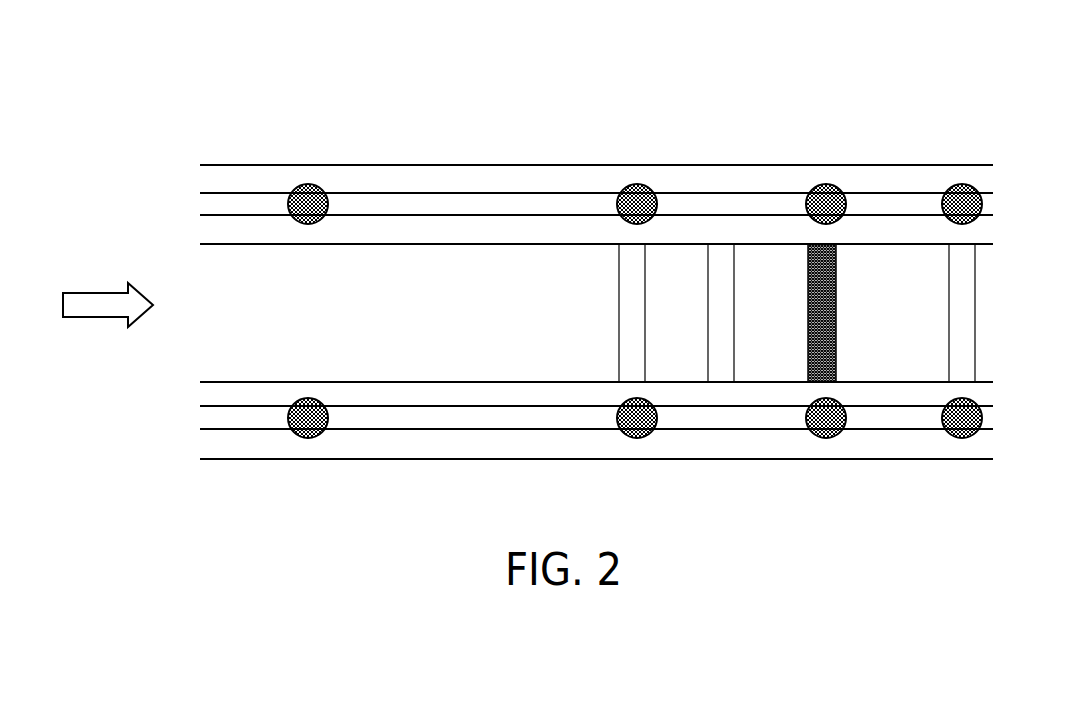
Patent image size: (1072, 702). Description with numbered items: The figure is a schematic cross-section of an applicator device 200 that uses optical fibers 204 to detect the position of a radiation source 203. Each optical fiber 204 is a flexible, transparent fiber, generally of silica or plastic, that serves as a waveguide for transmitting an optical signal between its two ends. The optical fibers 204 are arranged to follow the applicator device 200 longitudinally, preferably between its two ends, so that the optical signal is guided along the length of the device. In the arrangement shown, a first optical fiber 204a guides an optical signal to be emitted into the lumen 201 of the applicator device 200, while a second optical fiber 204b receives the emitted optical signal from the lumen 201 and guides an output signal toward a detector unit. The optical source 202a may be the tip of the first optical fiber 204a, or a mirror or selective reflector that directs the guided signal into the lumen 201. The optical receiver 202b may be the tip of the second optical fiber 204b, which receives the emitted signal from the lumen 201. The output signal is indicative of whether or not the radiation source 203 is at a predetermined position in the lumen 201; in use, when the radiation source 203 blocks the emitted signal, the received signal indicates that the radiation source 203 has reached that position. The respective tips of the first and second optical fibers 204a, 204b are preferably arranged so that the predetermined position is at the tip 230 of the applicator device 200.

The applicator device 200 is at (84, 126).
The lumen 201 is at (205, 333).
The optical source 202a is at (306, 183).
The optical receiver 202b is at (308, 438).
The radiation source 203 is at (807, 263).
The optical fiber 204 is at (97, 155).
The first optical fiber 204a is at (200, 193).
The second optical fiber 204b is at (200, 215).
The tip 230 is at (995, 312).